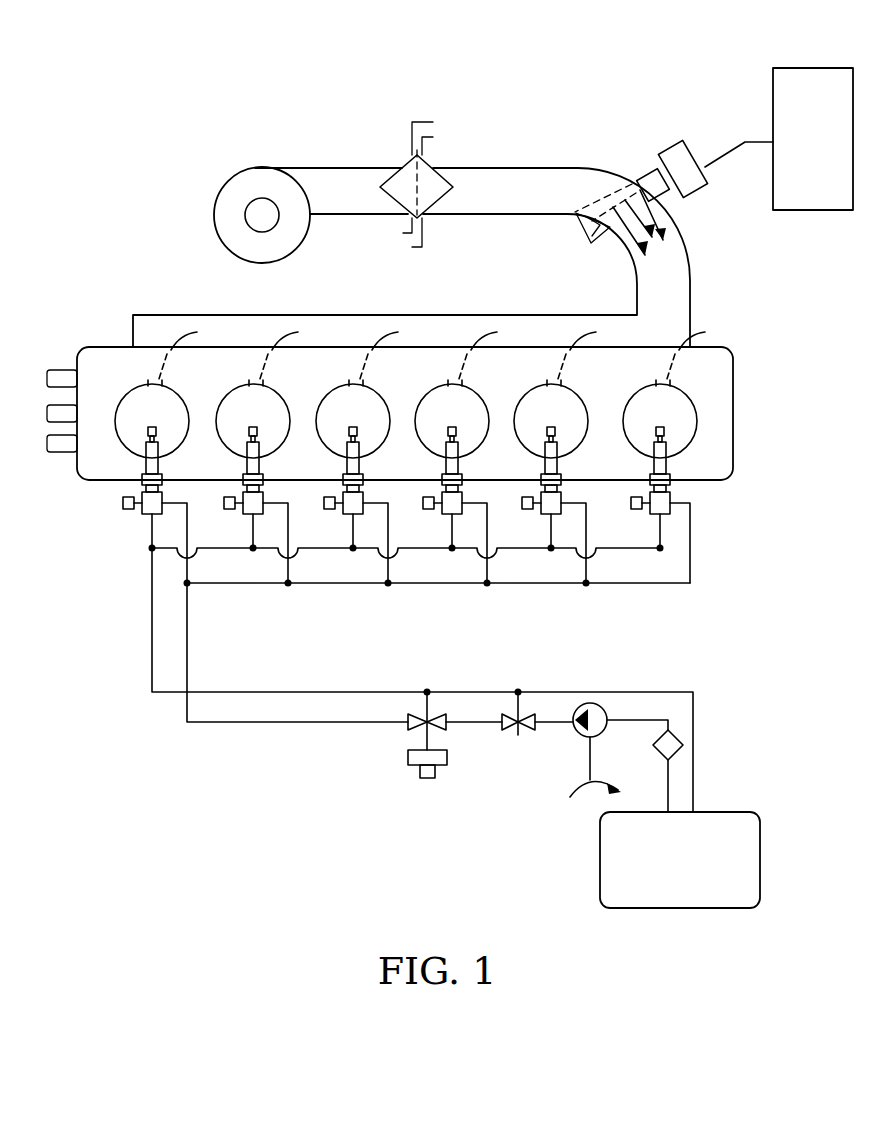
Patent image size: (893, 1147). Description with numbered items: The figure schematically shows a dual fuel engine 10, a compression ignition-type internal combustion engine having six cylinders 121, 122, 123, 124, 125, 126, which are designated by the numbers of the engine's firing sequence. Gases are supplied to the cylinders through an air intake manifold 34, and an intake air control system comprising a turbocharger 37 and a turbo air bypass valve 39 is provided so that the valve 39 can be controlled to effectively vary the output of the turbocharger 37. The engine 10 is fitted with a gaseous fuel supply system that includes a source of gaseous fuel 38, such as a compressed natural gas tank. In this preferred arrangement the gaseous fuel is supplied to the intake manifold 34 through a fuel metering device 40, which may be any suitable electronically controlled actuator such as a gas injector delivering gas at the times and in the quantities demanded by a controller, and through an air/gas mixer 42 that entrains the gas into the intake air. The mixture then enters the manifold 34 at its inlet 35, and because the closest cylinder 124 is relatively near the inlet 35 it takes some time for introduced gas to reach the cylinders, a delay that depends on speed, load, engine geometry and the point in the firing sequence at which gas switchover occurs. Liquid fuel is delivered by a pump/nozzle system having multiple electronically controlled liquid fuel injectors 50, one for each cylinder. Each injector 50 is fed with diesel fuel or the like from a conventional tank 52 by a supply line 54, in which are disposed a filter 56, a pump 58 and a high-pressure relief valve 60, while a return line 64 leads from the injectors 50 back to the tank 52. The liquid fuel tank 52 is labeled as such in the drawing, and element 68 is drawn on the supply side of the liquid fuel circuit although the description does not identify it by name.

The engine 10 is at (790, 348).
The first cylinder 121 is at (183, 398).
The second cylinder 122 is at (582, 398).
The third cylinder 123 is at (284, 398).
The fourth cylinder 124 is at (672, 395).
The fifth cylinder 125 is at (384, 398).
The sixth cylinder 126 is at (483, 398).
The air intake manifold 34 is at (218, 288).
The inlet 35 is at (677, 300).
The turbocharger 37 is at (253, 178).
The source of gaseous fuel 38 is at (785, 68).
The turbo air bypass valve 39 is at (430, 162).
The fuel metering device 40 is at (673, 153).
The air/gas mixer 42 is at (648, 170).
The liquid fuel injectors 50 is at (247, 493).
The tank 52 is at (762, 840).
The supply line 54 is at (280, 727).
The filter 56 is at (654, 746).
The pump 58 is at (575, 733).
The high-pressure relief valve 60 is at (506, 716).
The return line 64 is at (152, 647).
The pressure regulating valve 68 is at (410, 718).